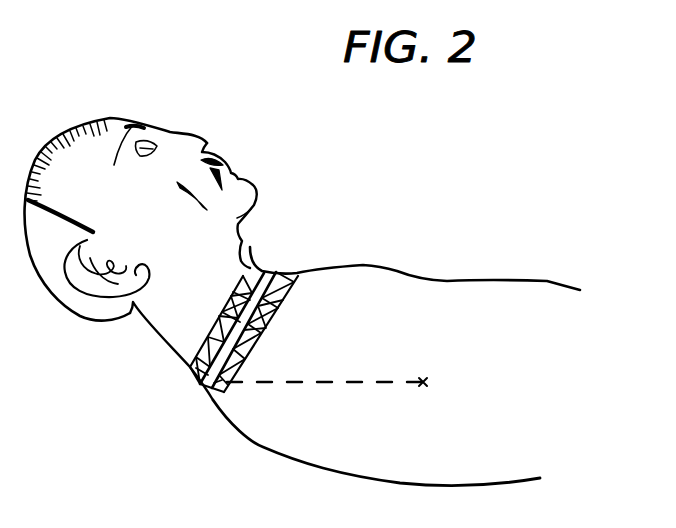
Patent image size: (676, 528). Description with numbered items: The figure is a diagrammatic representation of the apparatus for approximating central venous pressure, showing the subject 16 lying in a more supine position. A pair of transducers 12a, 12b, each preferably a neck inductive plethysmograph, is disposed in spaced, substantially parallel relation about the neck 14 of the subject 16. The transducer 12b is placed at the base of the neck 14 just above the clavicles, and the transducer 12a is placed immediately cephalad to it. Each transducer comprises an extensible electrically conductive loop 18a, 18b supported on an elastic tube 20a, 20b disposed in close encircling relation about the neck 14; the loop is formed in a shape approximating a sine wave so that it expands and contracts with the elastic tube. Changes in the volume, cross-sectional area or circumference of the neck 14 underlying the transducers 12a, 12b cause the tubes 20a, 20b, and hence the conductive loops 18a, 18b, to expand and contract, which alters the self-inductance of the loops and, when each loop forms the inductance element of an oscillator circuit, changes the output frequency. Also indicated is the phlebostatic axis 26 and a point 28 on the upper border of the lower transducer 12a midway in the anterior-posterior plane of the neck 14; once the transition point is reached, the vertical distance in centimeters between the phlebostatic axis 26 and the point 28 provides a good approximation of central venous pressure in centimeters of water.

The transducer 12a is at (190, 365).
The transducer 12b is at (197, 387).
The neck 14 is at (152, 330).
The subject 16 is at (246, 164).
The conductive loop 18a is at (245, 275).
The conductive loop 18b is at (273, 326).
The elastic tube 20a is at (240, 292).
The elastic tube 20b is at (296, 278).
The phlebostatic axis 26 is at (428, 380).
The point 28 is at (243, 347).